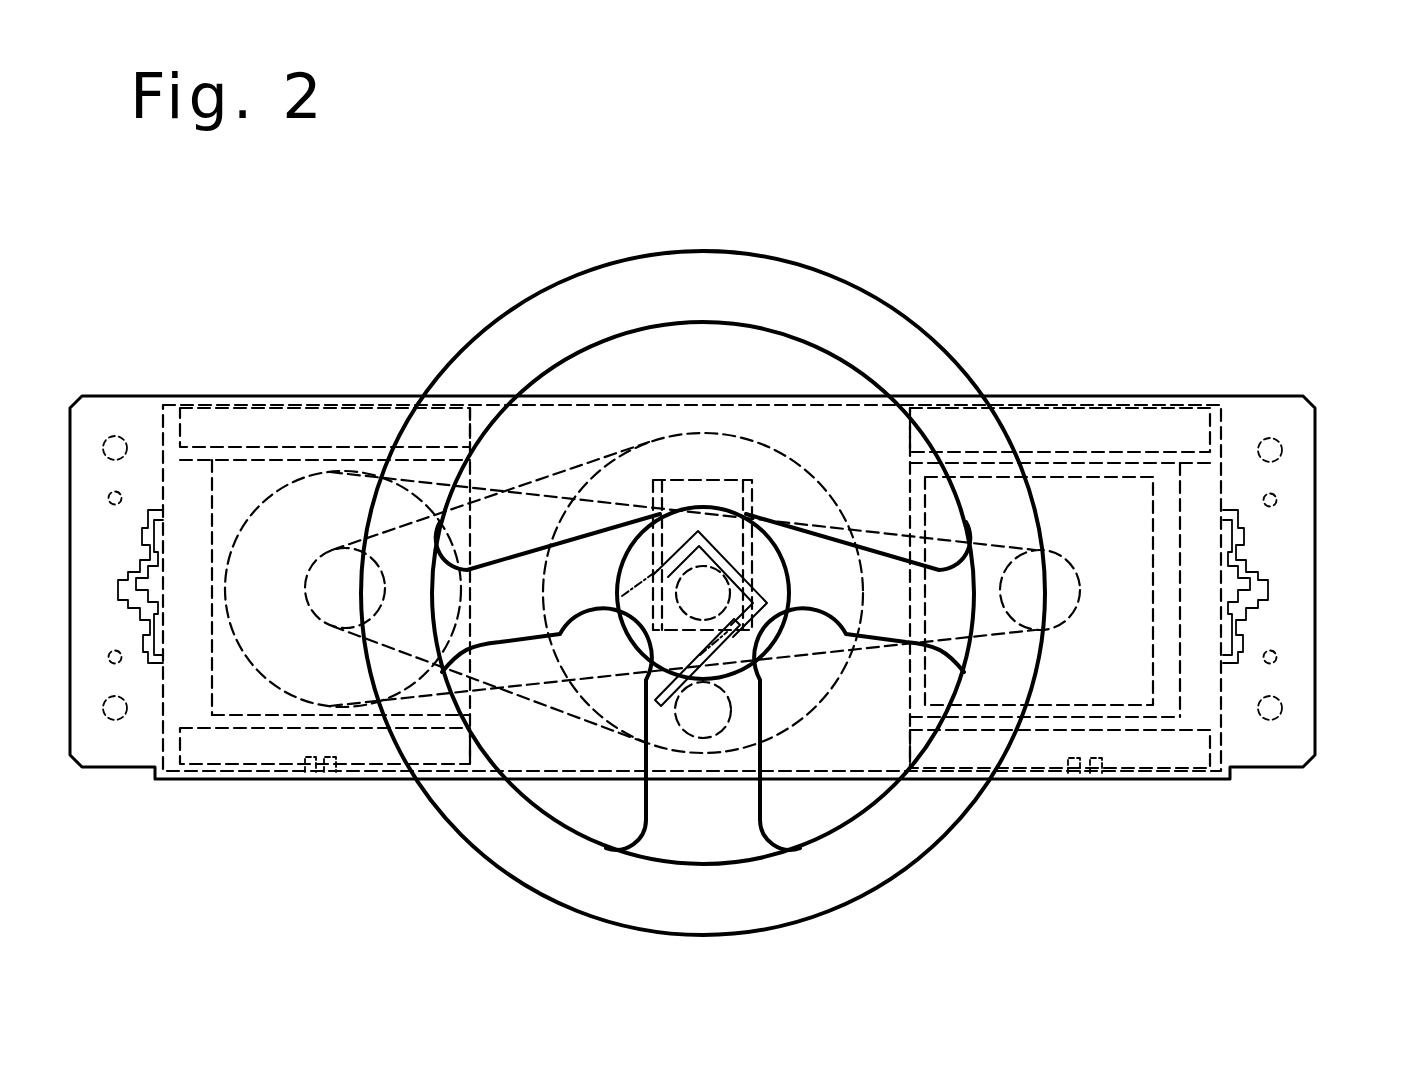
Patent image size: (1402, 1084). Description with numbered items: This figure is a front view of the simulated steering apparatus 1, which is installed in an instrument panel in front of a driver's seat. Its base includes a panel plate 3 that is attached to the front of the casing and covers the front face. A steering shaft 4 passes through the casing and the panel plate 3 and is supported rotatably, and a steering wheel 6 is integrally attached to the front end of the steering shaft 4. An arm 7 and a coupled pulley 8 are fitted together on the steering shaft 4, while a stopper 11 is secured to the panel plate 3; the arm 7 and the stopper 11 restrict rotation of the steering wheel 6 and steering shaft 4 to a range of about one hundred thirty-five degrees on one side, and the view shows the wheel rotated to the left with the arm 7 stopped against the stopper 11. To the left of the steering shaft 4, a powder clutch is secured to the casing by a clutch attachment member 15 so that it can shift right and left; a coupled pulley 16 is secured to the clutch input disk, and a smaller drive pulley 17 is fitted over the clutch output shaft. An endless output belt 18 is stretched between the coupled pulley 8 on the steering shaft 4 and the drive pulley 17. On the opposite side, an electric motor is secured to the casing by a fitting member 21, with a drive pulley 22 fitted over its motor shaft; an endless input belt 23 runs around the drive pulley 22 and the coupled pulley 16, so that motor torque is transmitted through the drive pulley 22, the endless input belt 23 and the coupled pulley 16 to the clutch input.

The simulated steering apparatus 1 is at (1122, 314).
The panel plate 3 is at (1318, 583).
The steering shaft 4 is at (748, 590).
The steering wheel 6 is at (930, 330).
The arm 7 is at (723, 478).
The coupled pulley 8 is at (822, 483).
The stopper 11 is at (675, 728).
The clutch attachment member 15 is at (212, 503).
The coupled pulley 16 is at (268, 497).
The drive pulley 17 is at (323, 613).
The endless output belt 18 is at (520, 483).
The fitting member 21 is at (1155, 534).
The drive pulley 22 is at (1074, 563).
The endless input belt 23 is at (873, 647).